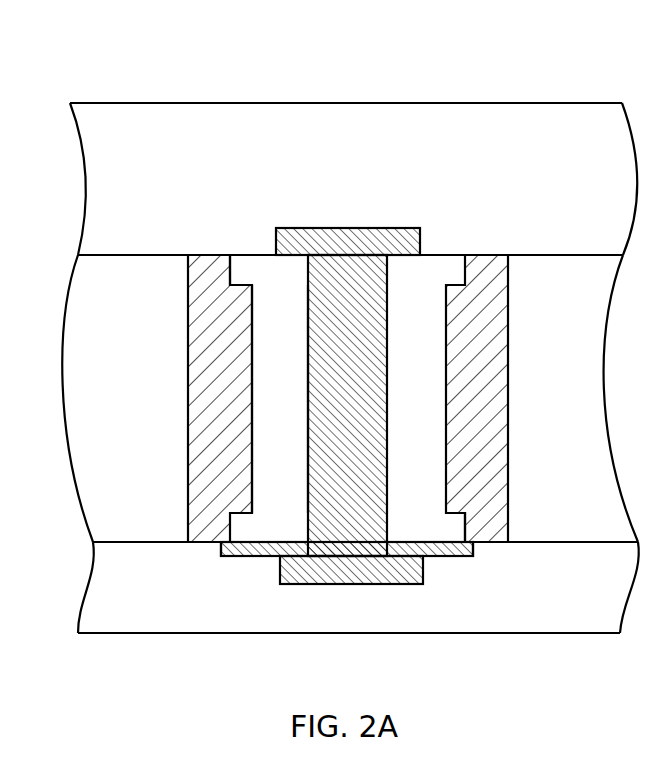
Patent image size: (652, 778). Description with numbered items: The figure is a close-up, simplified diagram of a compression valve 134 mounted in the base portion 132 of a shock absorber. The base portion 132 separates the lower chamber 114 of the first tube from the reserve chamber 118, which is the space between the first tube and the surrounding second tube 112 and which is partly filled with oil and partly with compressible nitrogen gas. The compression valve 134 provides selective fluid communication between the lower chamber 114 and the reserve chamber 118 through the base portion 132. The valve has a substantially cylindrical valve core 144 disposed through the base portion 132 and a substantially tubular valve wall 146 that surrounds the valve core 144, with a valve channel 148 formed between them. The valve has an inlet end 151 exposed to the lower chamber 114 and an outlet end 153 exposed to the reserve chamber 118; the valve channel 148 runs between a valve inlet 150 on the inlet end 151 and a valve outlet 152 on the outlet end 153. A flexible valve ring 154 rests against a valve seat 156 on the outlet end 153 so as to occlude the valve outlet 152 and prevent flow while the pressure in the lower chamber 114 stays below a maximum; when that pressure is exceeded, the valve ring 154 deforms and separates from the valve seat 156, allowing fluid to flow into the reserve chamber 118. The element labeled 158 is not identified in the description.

The second tube 112 is at (208, 634).
The lower chamber 114 is at (465, 166).
The reserve chamber 118 is at (370, 620).
The base portion 132 is at (113, 458).
The compression valve 134 is at (294, 128).
The valve core 144 is at (347, 268).
The valve wall 146 is at (212, 403).
The valve channel 148 is at (272, 350).
The valve inlet 150 is at (466, 242).
The inlet end 151 is at (215, 254).
The valve outlet 152 is at (437, 518).
The outlet end 153 is at (485, 545).
The valve ring 154 is at (235, 557).
The valve seat 156 is at (197, 552).
The pin head 158 is at (454, 570).